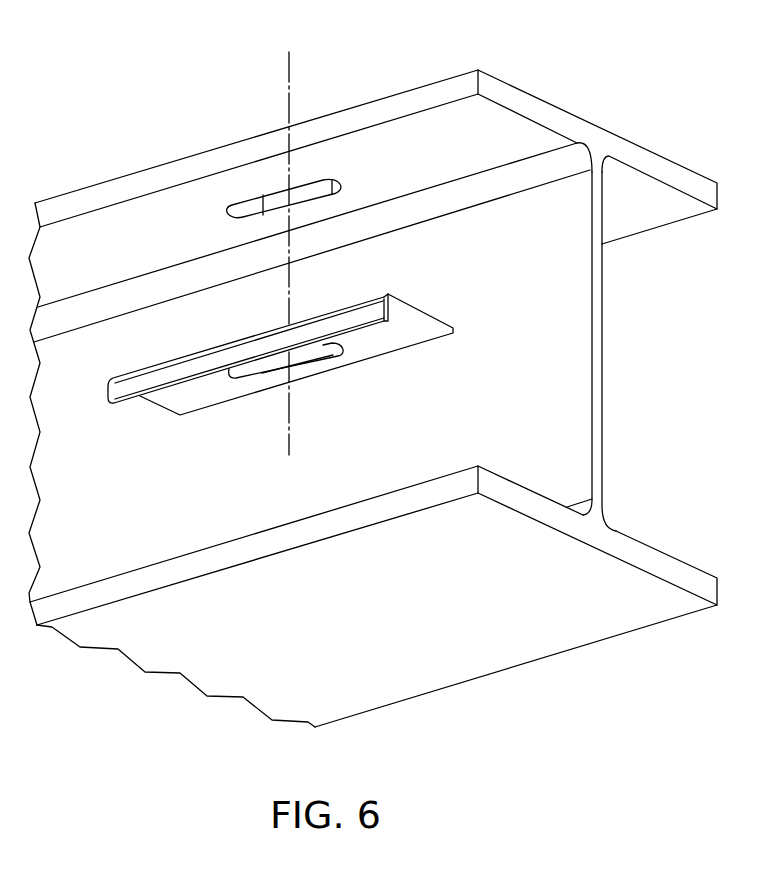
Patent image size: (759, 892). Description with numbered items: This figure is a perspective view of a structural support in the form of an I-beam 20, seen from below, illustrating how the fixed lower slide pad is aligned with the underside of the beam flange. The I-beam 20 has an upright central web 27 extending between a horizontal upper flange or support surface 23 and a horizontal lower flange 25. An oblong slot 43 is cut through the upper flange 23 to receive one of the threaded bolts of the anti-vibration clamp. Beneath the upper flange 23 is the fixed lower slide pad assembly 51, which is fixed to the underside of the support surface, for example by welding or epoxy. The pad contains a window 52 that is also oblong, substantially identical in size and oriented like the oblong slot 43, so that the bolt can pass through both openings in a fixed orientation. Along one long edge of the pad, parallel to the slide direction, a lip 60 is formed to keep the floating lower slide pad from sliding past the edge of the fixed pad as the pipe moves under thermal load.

The I-beam 20 is at (566, 88).
The upper flange 23 is at (697, 182).
The lower flange 25 is at (703, 578).
The central web 27 is at (586, 350).
The oblong slot 43 is at (237, 214).
The bracket assembly 51 is at (122, 425).
The window 52 is at (251, 366).
The lip 60 is at (372, 313).